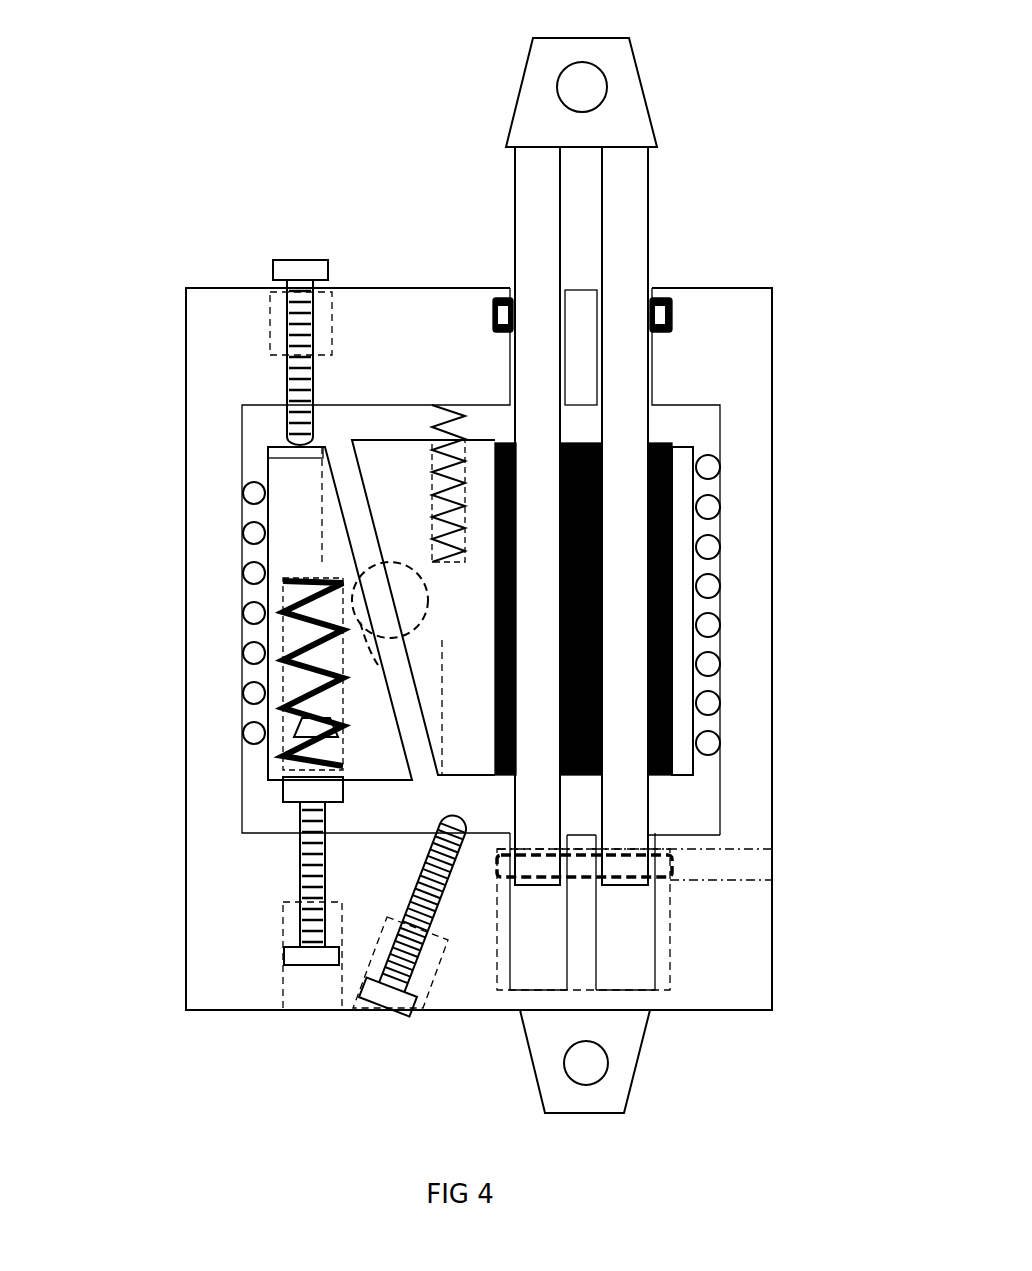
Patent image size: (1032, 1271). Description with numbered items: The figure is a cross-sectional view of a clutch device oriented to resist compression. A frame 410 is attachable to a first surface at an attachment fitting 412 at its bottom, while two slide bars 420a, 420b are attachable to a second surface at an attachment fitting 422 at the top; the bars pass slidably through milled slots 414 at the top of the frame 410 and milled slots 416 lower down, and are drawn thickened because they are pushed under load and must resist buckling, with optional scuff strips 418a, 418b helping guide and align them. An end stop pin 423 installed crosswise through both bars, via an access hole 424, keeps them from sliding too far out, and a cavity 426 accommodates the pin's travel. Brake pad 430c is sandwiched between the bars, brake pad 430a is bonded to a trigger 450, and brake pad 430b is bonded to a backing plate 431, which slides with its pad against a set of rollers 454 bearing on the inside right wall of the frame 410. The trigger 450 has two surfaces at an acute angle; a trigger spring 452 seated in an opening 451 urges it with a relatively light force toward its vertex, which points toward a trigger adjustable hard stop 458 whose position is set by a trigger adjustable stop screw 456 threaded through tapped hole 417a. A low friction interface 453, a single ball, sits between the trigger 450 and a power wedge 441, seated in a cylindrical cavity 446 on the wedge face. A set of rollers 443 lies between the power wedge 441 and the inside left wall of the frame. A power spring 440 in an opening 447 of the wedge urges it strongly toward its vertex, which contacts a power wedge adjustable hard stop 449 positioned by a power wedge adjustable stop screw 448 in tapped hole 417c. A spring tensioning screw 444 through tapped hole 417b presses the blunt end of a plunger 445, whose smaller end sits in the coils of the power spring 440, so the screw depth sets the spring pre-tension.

The frame 410 is at (723, 370).
The attachment fitting 412 is at (586, 1063).
The milled slots 414 is at (652, 297).
The milled slots 416 is at (650, 835).
The tapped hole 417a is at (423, 875).
The tapped hole 417b is at (453, 813).
The tapped hole 417c is at (290, 378).
The scuff strip 418a is at (497, 318).
The scuff strip 418b is at (665, 316).
The slide bar 420a is at (540, 163).
The slide bar 420b is at (633, 197).
The attachment fitting 422 is at (582, 87).
The end stop pin 423 is at (662, 867).
The access hole 424 is at (738, 882).
The cavity 426 is at (672, 962).
The brake pad 430a is at (528, 618).
The brake pad 430b is at (672, 673).
The brake pad 430c is at (605, 718).
The backing plate 431 is at (686, 565).
The power spring 440 is at (338, 703).
The power wedge 441 is at (358, 682).
The rollers 443 is at (252, 573).
The spring tensioning screw 444 is at (310, 957).
The plunger 445 is at (297, 788).
The cylindrical cavity 446 is at (355, 645).
The opening 447 is at (293, 628).
The power wedge adjustable stop screw 448 is at (300, 272).
The power wedge adjustable hard stop 449 is at (290, 443).
The trigger 450 is at (377, 452).
The opening 451 is at (430, 475).
The trigger spring 452 is at (432, 493).
The low friction interface 453 is at (380, 578).
The rollers 454 is at (708, 507).
The trigger adjustable stop screw 456 is at (393, 1000).
The trigger adjustable hard stop 458 is at (322, 833).